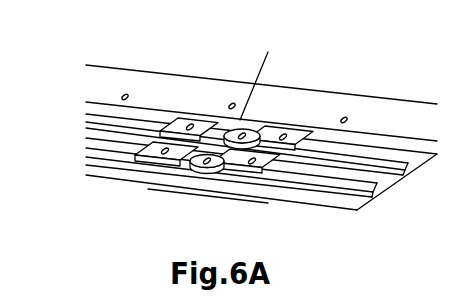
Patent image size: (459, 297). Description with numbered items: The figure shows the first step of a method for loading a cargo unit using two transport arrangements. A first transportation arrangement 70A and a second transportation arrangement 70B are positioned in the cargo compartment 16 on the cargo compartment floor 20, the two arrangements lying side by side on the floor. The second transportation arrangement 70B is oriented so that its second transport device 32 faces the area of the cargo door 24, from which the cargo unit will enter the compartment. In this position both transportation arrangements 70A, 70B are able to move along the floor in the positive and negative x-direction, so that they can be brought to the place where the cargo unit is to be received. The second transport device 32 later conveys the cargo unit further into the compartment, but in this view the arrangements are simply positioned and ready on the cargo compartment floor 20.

The cargo compartment 16 is at (172, 66).
The cargo compartment floor 20 is at (403, 118).
The cargo door 24 is at (170, 200).
The second transport device 32 is at (206, 167).
The first transportation arrangement 70A is at (142, 115).
The second transportation arrangement 70B is at (126, 150).